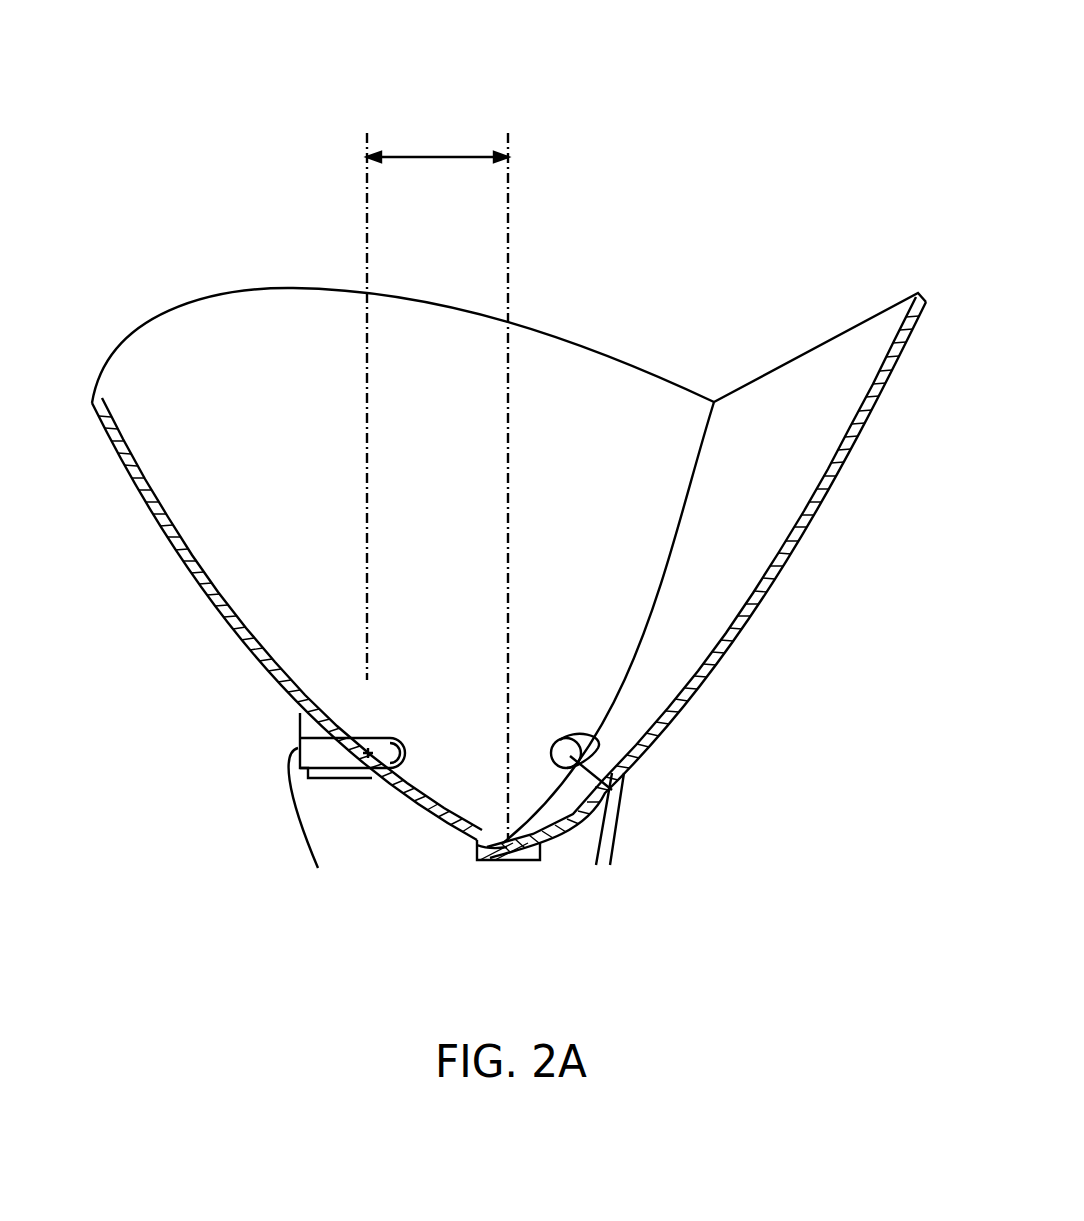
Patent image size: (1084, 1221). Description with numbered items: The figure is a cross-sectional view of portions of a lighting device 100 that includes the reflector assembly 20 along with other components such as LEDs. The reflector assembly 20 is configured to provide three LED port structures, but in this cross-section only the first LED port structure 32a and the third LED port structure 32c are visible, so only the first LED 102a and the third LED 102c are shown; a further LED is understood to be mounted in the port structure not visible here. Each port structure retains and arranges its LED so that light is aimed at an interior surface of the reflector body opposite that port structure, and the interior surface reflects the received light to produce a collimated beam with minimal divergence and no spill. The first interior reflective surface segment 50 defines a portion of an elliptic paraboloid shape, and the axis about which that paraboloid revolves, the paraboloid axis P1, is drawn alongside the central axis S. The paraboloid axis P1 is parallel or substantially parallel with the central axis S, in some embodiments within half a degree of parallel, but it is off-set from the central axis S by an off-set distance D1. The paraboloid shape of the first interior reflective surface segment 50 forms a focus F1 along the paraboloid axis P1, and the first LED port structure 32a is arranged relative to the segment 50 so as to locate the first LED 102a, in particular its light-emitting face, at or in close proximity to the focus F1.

The lighting device 100 is at (818, 138).
The reflector assembly 20 is at (182, 290).
The first interior reflective surface segment 50 is at (782, 412).
The paraboloid axis P1 is at (365, 505).
The central axis S is at (508, 253).
The off-set distance D1 is at (437, 144).
The focus F1 is at (368, 752).
The first LED 102a is at (333, 752).
The first LED port structure 32a is at (323, 782).
The third LED 102c is at (623, 767).
The third LED port structure 32c is at (607, 740).